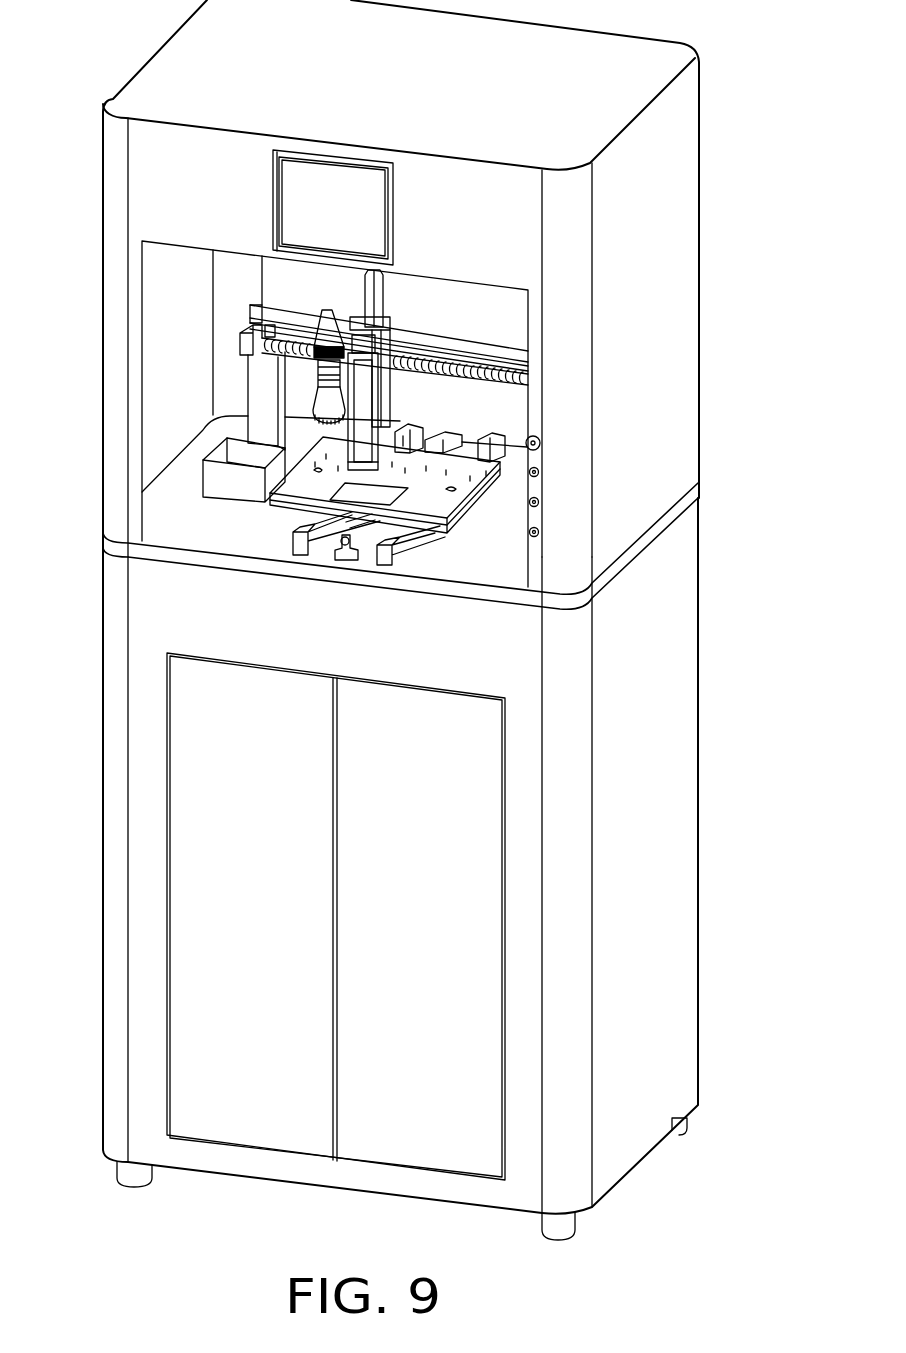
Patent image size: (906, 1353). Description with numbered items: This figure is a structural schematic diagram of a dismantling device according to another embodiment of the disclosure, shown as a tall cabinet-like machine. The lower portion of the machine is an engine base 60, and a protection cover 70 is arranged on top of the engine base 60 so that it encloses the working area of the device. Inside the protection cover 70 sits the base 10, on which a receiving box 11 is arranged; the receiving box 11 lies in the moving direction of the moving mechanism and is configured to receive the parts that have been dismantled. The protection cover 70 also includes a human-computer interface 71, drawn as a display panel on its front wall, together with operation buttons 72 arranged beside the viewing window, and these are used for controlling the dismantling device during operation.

The base 10 is at (167, 520).
The receiving box 11 is at (213, 472).
The engine base 60 is at (682, 632).
The protection cover 70 is at (680, 333).
The human-computer interface 71 is at (295, 209).
The operation buttons 72 is at (542, 442).